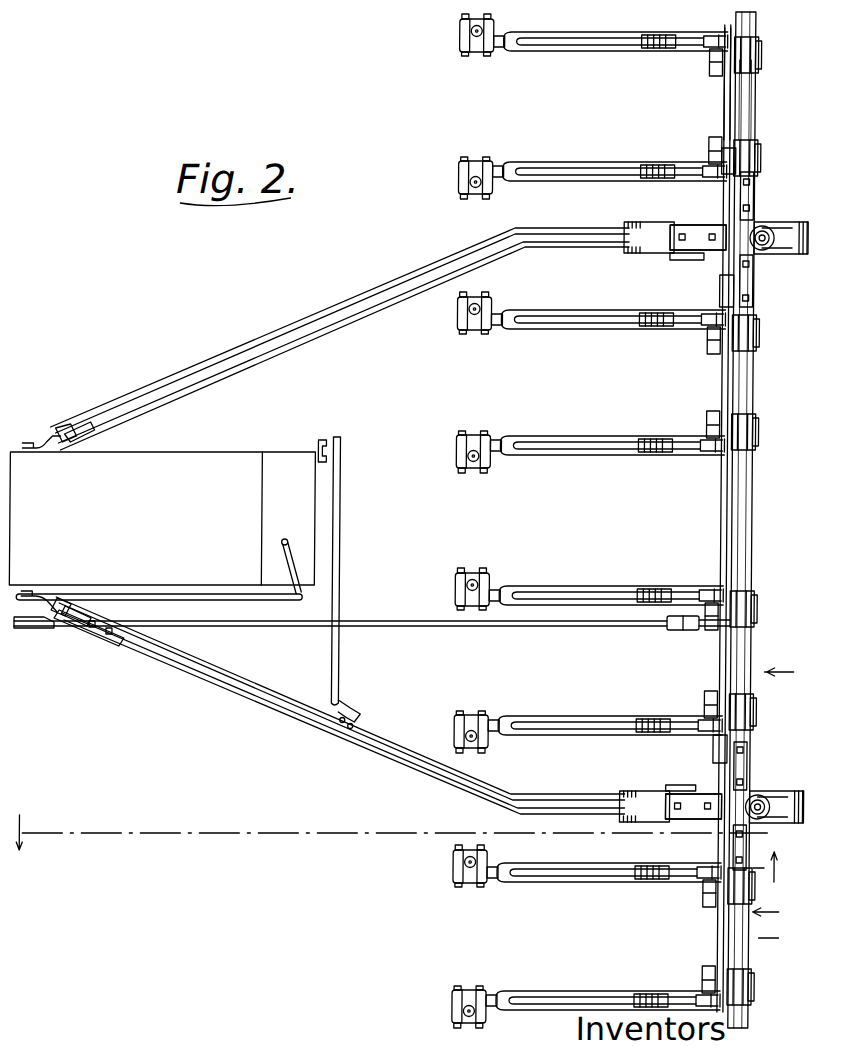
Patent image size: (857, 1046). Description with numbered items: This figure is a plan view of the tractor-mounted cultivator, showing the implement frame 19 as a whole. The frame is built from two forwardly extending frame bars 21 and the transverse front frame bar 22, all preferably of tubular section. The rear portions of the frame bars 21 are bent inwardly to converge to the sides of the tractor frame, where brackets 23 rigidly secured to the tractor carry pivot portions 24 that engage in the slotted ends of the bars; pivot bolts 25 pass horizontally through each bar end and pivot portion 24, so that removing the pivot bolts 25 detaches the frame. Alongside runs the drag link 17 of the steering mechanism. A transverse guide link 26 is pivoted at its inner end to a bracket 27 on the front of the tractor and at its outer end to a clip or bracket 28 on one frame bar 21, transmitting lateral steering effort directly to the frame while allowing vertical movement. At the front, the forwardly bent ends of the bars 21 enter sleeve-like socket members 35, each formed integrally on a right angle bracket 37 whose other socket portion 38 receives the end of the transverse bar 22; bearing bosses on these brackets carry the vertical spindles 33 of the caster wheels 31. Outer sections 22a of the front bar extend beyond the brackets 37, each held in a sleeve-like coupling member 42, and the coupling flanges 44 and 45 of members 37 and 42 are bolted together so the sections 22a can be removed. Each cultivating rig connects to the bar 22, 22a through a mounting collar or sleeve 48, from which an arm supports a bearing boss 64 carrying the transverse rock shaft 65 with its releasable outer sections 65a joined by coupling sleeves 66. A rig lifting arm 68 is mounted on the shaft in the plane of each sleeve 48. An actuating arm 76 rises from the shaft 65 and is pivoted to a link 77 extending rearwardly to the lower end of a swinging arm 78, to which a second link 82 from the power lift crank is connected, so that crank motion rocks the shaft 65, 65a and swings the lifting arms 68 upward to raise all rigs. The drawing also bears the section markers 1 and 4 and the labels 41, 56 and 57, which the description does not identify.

The section line 1- 1 is at (396, 849).
The section line 4- 4 is at (772, 795).
The drag link 17 is at (218, 605).
The implement frame 19 is at (362, 292).
The forwardly extending frame bars 21 is at (272, 338).
The transverse front frame bar 22 is at (752, 530).
The outer sections of the front frame bar 22a is at (752, 96).
The brackets 23 is at (38, 444).
The pivot portions 24 is at (80, 428).
The pivot bolts 25 is at (64, 426).
The transverse guide link 26 is at (341, 542).
The bracket 27 is at (330, 438).
The clip or bracket 28 is at (360, 716).
The caster wheels 31 is at (778, 236).
The vertical spindle 33 is at (768, 228).
The socket members 35 is at (672, 232).
The right angle bracket 37 is at (700, 258).
The sleeve-like socket portion 38 is at (754, 290).
The tool clamp 41 is at (457, 32).
The coupling member 42 is at (754, 190).
The coupling flange 44 is at (700, 230).
The coupling flange 45 is at (710, 232).
The mounting collar or sleeve 48 is at (756, 22).
The tool beam 56 is at (608, 0).
The rod 57 is at (620, 58).
The bearing boss 64 is at (718, 156).
The transverse rock shaft 65 is at (720, 514).
The outer sections of the rock shaft 65a is at (720, 100).
The coupling sleeves 66 is at (718, 292).
The rig lifting arm 68 is at (681, 58).
The actuating arm 76 is at (692, 632).
The link 77 is at (405, 620).
The swinging arm 78 is at (80, 634).
The second link 82 is at (20, 630).